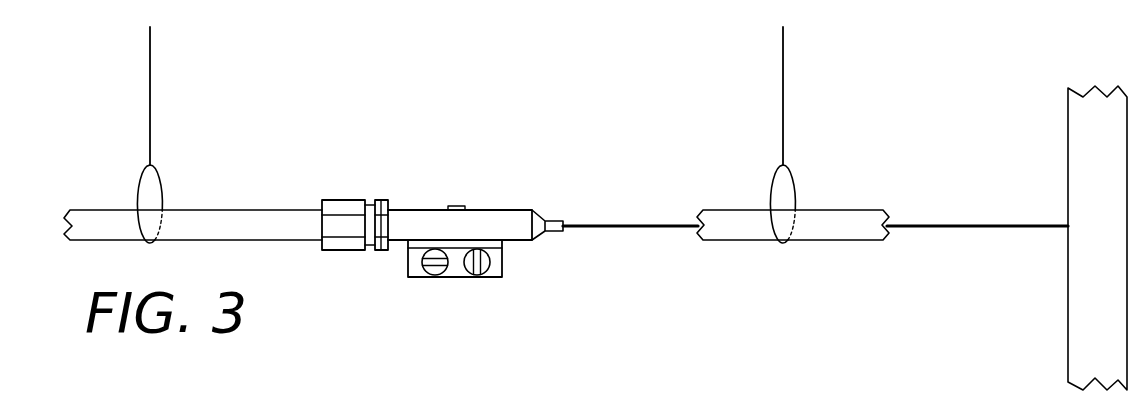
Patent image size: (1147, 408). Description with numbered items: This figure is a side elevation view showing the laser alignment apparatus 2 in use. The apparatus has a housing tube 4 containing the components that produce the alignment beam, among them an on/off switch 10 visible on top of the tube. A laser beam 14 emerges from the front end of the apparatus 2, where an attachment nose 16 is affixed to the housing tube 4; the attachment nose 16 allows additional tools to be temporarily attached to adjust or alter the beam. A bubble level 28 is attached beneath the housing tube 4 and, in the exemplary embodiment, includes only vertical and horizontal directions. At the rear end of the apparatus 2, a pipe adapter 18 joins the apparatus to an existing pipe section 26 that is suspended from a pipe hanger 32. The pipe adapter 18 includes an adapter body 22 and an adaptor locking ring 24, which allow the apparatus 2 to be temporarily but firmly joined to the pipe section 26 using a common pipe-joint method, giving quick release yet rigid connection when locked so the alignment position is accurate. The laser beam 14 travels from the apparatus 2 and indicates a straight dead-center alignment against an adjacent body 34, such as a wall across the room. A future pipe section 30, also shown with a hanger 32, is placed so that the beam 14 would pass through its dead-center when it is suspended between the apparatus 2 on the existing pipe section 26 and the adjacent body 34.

The laser alignment apparatus 2 is at (471, 209).
The housing tube 4 is at (500, 210).
The on/off switch 10 is at (462, 206).
The laser beam 14 is at (672, 225).
The attachment nose 16 is at (540, 216).
The pipe adapter 18 is at (331, 222).
The adapter body 22 is at (322, 247).
The adaptor locking ring 24 is at (383, 252).
The existing pipe section 26 is at (175, 210).
The bubble level 28 is at (409, 276).
The future pipe section 30 is at (750, 210).
The pipe hanger 32 is at (150, 77).
The adjacent body 34 is at (1068, 168).